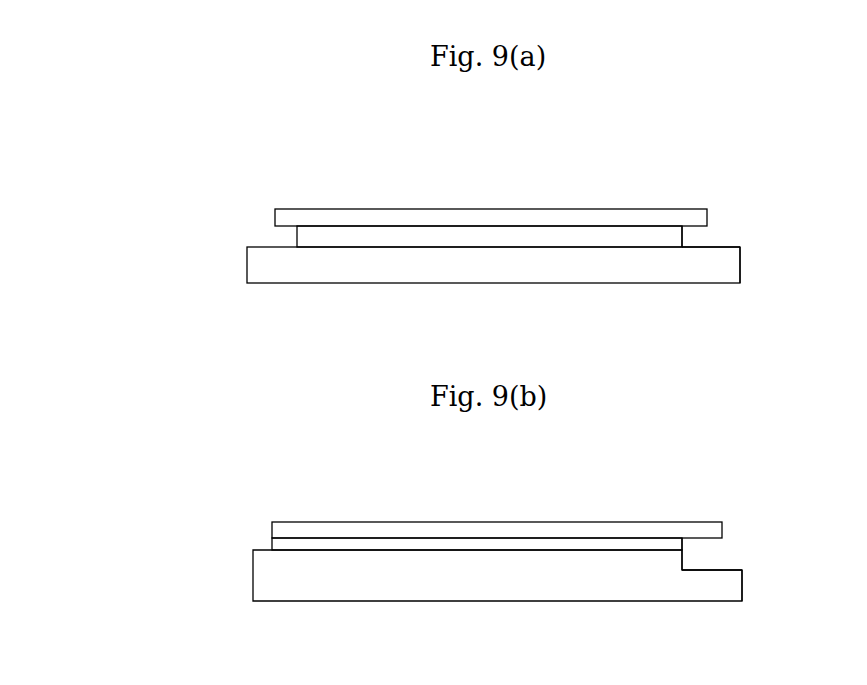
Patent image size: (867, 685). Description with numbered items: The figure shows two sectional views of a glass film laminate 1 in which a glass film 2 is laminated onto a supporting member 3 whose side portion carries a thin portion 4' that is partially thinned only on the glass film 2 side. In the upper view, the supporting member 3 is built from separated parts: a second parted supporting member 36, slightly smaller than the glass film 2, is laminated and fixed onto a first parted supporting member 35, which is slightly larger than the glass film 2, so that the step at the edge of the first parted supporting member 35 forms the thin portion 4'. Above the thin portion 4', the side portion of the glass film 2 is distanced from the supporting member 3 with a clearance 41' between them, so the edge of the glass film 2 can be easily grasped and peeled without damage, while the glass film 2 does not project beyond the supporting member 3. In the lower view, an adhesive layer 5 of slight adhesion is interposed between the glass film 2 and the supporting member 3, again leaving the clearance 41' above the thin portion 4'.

In FIG. 9A, the glass film laminate 1 is at (461, 231).
In FIG. 9B, the glass film laminate 1 is at (500, 562).
In FIG. 9A, the glass film 2 is at (552, 218).
In FIG. 9B, the glass film 2 is at (490, 522).
In FIG. 9A, the supporting member 3 is at (414, 254).
In FIG. 9B, the supporting member 3 is at (418, 590).
In FIG. 9A, the first parted supporting member 35 is at (247, 265).
In FIG. 9A, the second parted supporting member 36 is at (297, 240).
In FIG. 9A, the clearance 41' is at (758, 241).
In FIG. 9B, the clearance 41' is at (752, 556).
In FIG. 9A, the thin portion 4' is at (743, 299).
In FIG. 9B, the thin portion 4' is at (742, 605).
In FIG. 9B, the adhesive layer 5 is at (272, 541).